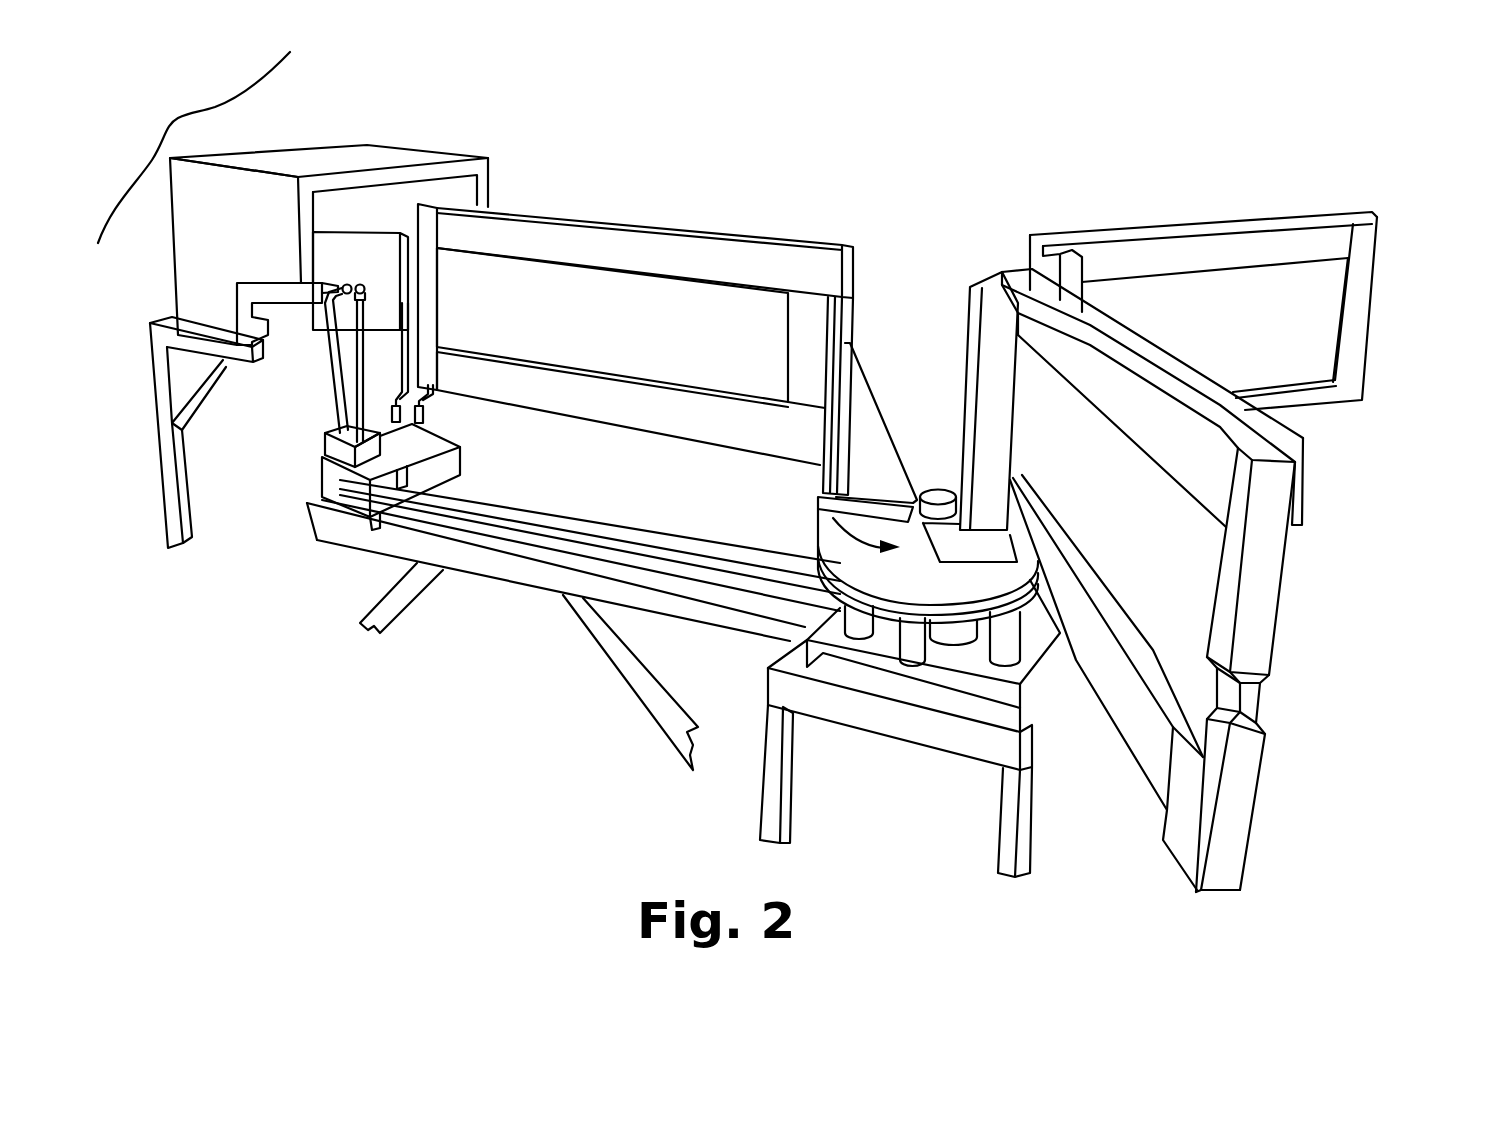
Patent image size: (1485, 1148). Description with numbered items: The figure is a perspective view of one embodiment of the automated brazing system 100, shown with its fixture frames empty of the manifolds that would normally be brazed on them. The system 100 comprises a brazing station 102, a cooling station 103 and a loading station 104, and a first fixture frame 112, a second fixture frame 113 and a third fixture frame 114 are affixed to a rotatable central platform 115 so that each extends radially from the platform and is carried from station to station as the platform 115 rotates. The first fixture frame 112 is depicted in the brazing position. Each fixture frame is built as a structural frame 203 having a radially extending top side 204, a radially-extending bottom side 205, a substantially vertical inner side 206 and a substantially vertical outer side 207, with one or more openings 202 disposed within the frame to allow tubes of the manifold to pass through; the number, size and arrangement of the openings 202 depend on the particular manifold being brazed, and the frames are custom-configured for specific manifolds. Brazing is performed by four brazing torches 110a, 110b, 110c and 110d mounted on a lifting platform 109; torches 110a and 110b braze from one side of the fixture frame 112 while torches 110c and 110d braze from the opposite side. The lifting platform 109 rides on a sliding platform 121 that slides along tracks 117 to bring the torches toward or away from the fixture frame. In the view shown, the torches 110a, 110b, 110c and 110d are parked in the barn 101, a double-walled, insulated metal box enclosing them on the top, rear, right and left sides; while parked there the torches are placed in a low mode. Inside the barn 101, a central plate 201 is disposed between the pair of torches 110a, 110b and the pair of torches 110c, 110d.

The automated brazing system 100 is at (1293, 126).
The barn 101 is at (246, 230).
The brazing station 102 is at (194, 147).
The cooling station 103 is at (1288, 897).
The loading station 104 is at (1251, 297).
The lifting platform 109 is at (395, 477).
The brazing torch 110a is at (381, 262).
The brazing torch 110b is at (337, 285).
The brazing torch 110c is at (403, 345).
The brazing torch 110d is at (430, 397).
The first fixture frame 112 is at (645, 343).
The second fixture frame 113 is at (1190, 450).
The third fixture frame 114 is at (1295, 227).
The rotatable central platform 115 is at (943, 478).
The tracks 117 is at (577, 567).
The sliding platform 121 is at (343, 477).
The central plate 201 is at (340, 243).
The openings 202 is at (648, 340).
The structural frames 203 is at (635, 323).
The radially extending top side 204 is at (748, 262).
The radially-extending bottom side 205 is at (733, 422).
The substantially vertical inner side 206 is at (805, 342).
The substantially vertical outer side 207 is at (423, 302).